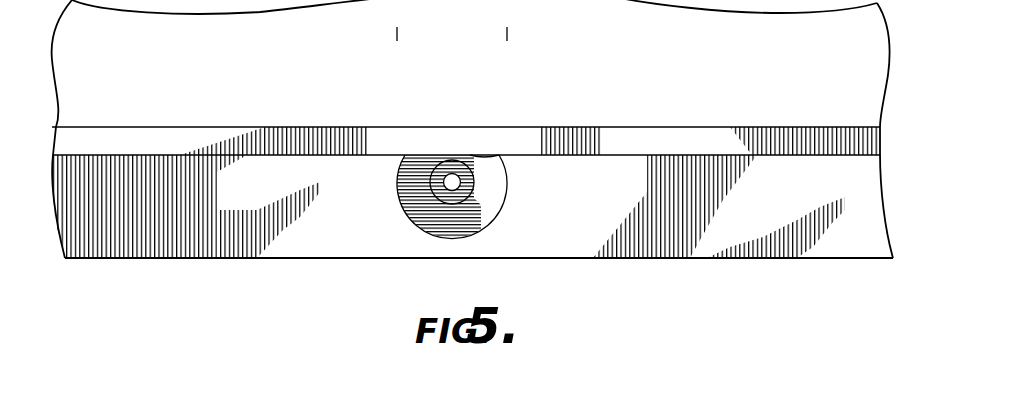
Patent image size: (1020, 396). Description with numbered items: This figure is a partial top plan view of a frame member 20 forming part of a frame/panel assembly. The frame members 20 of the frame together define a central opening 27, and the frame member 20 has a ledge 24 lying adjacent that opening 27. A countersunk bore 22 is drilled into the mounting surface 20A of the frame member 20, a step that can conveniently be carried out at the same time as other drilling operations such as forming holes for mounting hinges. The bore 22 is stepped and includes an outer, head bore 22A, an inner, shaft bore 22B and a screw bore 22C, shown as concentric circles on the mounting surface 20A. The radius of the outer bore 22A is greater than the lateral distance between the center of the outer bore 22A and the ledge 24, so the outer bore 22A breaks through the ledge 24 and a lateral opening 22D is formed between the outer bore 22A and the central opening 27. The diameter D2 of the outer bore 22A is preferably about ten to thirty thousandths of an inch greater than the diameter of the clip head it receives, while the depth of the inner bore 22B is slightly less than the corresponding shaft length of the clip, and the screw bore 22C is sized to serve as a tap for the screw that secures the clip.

The frame member 20 is at (884, 217).
The mounting surface 20A is at (658, 237).
The ledge 24 is at (173, 142).
The central opening 27 is at (277, 71).
The countersunk bore 22 is at (436, 185).
The outer head bore 22A is at (502, 200).
The inner shaft bore 22B is at (457, 205).
The screw bore 22C is at (468, 175).
The lateral opening 22D is at (486, 155).
The diameter of outer bore D2 is at (507, 34).